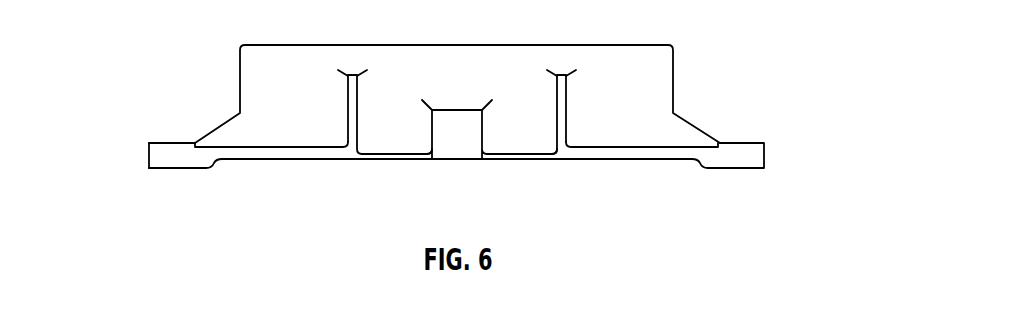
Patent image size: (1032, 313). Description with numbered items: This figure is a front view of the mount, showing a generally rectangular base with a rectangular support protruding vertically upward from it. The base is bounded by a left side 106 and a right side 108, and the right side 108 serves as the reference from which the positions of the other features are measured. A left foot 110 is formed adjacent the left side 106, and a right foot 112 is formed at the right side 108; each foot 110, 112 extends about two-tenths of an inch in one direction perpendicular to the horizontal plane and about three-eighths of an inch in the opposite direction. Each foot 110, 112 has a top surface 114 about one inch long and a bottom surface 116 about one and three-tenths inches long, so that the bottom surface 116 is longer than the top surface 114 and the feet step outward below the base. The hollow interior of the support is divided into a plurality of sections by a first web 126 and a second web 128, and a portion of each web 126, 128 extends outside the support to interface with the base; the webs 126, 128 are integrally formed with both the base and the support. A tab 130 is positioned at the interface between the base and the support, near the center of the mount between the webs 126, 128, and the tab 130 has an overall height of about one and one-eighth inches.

The left side 106 is at (148, 155).
The right side 108 is at (765, 157).
The left foot 110 is at (175, 159).
The right foot 112 is at (748, 158).
The top surface 114 is at (172, 142).
The bottom surface 116 is at (193, 169).
The first web 126 is at (358, 98).
The second web 128 is at (566, 98).
The tab 130 is at (458, 133).